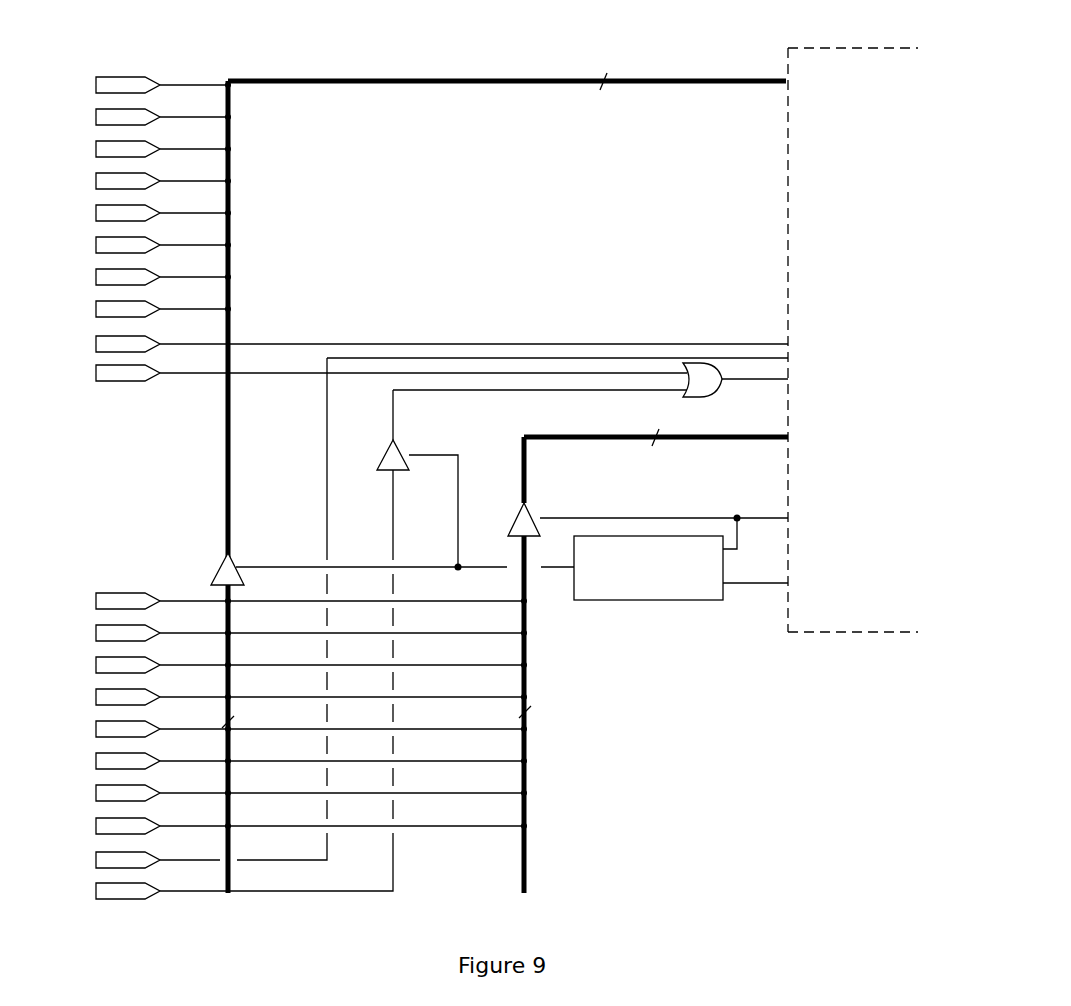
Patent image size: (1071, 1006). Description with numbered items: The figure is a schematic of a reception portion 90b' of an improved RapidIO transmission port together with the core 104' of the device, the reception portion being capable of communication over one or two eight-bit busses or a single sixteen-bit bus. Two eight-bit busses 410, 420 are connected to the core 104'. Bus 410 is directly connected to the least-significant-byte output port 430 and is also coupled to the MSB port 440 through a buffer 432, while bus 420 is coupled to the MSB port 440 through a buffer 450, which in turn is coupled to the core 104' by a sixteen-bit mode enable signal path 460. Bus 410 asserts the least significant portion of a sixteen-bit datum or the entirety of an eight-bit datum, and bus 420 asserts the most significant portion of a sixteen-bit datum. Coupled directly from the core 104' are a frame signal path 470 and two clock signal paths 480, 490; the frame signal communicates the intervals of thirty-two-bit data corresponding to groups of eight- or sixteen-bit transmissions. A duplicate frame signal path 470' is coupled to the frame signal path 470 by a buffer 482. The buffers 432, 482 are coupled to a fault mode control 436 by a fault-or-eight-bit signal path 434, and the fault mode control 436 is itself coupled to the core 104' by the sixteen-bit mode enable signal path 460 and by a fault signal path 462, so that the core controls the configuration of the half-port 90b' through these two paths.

The bus 410 is at (575, 80).
The bus 420 is at (613, 437).
The LSB/8 bit output port 430 is at (80, 78).
The buffer 432 is at (215, 570).
The fault/8 signal path 434 is at (307, 567).
The fault mode control 436 is at (672, 600).
The MSB port 440 is at (80, 598).
The buffer 450 is at (512, 533).
The 16 bit mode enable signal path 460 is at (650, 518).
The fault signal path 462 is at (766, 584).
The frame signal path 470 is at (372, 374).
The duplicate frame signal path 470' is at (366, 647).
The clock signal path 480 is at (423, 345).
The buffer 482 is at (397, 472).
The clock signal path 490 is at (418, 615).
The core 104' is at (853, 340).
The reception portion 90b' is at (652, 732).